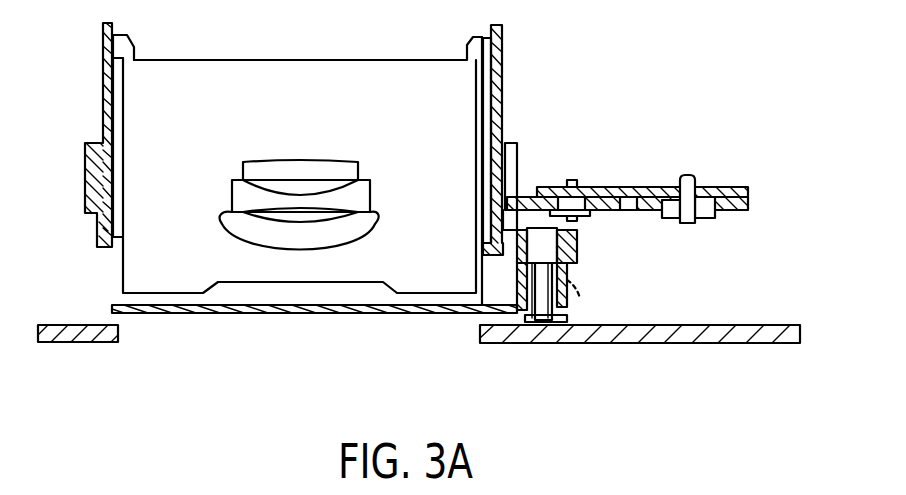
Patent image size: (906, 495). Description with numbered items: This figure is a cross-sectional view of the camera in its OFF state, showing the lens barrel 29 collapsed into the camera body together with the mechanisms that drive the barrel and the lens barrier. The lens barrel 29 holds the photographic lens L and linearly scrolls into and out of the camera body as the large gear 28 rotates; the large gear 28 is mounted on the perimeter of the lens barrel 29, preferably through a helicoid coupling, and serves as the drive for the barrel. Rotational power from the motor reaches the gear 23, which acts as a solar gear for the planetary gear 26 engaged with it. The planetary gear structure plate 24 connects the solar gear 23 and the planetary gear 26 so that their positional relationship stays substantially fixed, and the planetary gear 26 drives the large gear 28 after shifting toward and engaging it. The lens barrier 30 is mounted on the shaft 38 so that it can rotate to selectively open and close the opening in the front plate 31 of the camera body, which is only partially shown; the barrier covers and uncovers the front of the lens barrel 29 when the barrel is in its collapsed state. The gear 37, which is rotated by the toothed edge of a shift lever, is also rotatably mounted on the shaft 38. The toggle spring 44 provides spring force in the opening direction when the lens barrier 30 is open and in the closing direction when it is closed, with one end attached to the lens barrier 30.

The gear 23 is at (727, 190).
The planetary gear structure plate 24 is at (647, 187).
The planetary gear 26 is at (530, 193).
The large gear 28 is at (498, 147).
The lens barrel 29 is at (148, 262).
The lens barrier 30 is at (385, 315).
The front plate 31 is at (710, 343).
The gear 37 is at (557, 242).
The shaft 38 is at (545, 303).
The toggle spring 44 is at (580, 298).
The photographic lens L is at (272, 233).